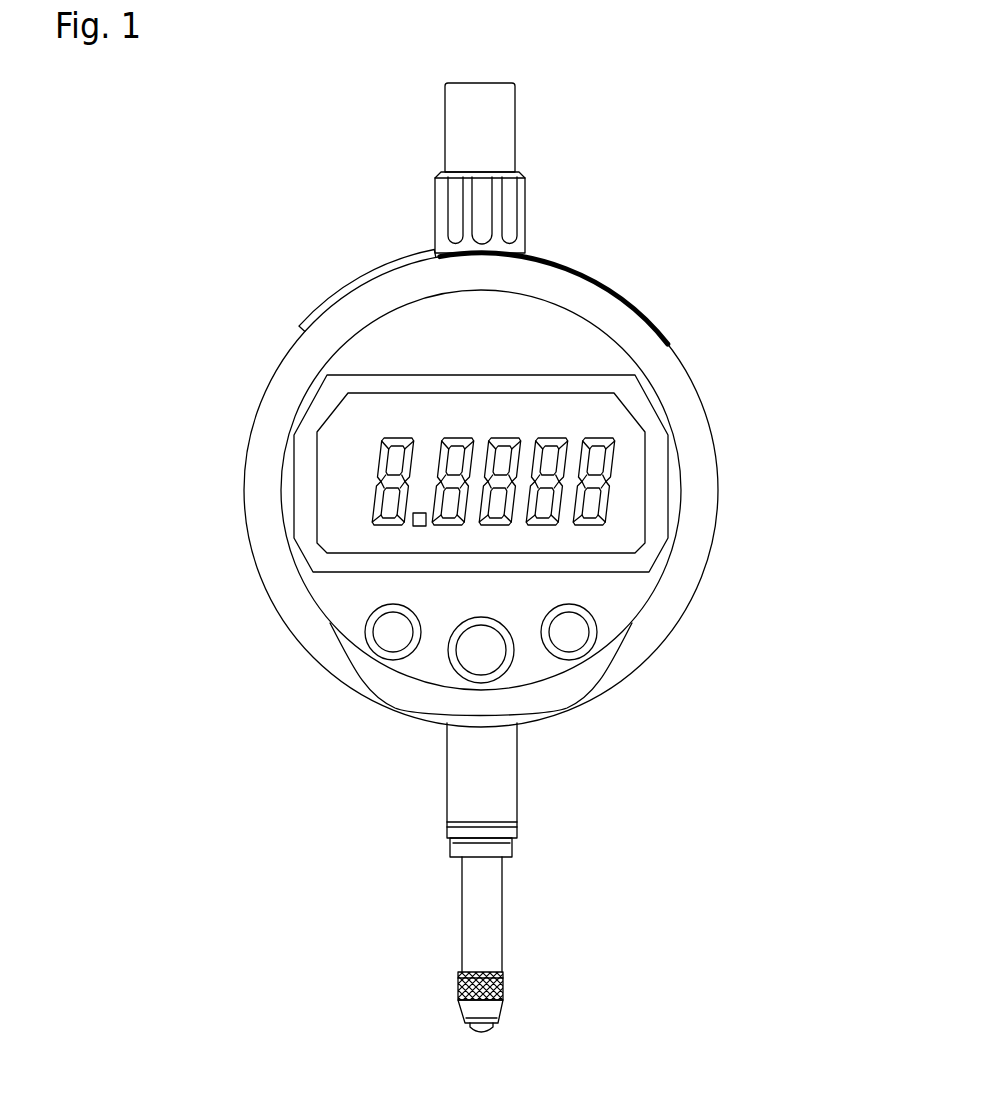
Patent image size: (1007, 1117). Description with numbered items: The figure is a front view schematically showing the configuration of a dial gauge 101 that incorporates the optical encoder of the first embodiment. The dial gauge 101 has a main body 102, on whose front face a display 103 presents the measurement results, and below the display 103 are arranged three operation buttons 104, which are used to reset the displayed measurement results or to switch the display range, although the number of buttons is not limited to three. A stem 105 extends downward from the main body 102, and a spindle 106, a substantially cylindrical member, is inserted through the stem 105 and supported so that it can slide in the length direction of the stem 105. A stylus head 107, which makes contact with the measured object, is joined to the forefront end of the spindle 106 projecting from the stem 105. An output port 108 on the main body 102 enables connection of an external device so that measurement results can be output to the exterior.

The dial gauge 101 is at (545, 571).
The main body 102 is at (669, 346).
The display 103 is at (645, 490).
The operation button 104 is at (593, 622).
The stem 105 is at (519, 775).
The spindle 106 is at (504, 918).
The stylus head 107 is at (487, 1030).
The output port 108 is at (362, 278).